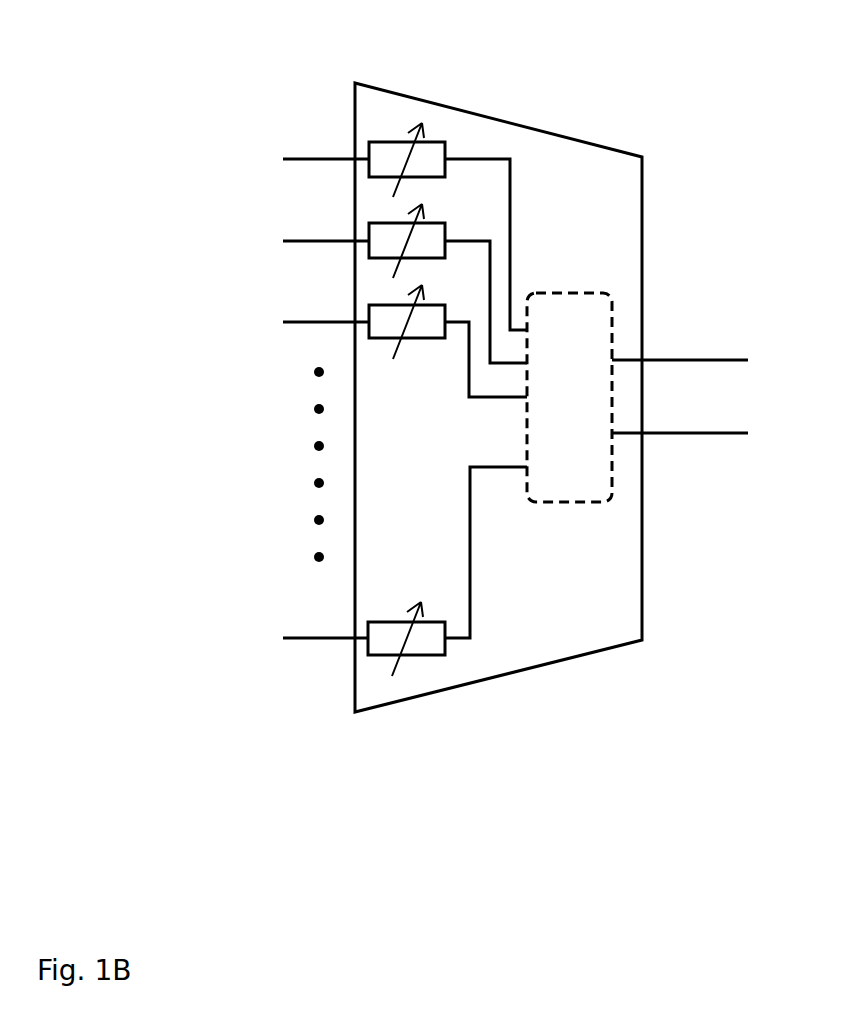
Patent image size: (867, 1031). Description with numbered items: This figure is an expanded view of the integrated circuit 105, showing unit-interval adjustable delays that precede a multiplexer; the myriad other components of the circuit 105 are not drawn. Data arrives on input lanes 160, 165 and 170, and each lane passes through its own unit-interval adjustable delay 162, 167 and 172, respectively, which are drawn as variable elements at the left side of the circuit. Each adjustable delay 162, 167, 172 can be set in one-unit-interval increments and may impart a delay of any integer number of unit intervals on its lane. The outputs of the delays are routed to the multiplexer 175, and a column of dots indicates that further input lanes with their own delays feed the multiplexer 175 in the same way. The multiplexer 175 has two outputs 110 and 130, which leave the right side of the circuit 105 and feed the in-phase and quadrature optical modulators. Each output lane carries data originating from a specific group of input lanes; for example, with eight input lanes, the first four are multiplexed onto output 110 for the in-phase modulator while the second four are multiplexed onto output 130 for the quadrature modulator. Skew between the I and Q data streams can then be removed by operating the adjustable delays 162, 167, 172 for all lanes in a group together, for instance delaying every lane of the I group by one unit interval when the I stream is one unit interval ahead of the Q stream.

The integrated circuit 105 is at (372, 83).
The input lane 160 is at (291, 156).
The unit-interval adjustable delay 162 is at (450, 178).
The input lane 165 is at (291, 238).
The unit-interval adjustable delay 167 is at (450, 258).
The input lane 170 is at (290, 320).
The unit-interval adjustable delay 172 is at (413, 343).
The multiplexer 175 is at (592, 482).
The output 110 is at (733, 352).
The output 130 is at (737, 443).